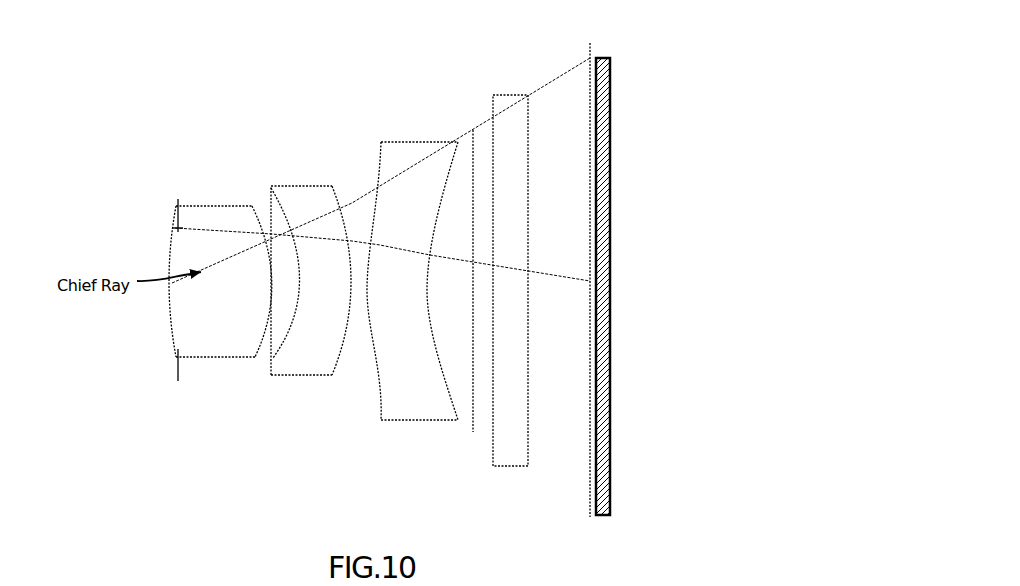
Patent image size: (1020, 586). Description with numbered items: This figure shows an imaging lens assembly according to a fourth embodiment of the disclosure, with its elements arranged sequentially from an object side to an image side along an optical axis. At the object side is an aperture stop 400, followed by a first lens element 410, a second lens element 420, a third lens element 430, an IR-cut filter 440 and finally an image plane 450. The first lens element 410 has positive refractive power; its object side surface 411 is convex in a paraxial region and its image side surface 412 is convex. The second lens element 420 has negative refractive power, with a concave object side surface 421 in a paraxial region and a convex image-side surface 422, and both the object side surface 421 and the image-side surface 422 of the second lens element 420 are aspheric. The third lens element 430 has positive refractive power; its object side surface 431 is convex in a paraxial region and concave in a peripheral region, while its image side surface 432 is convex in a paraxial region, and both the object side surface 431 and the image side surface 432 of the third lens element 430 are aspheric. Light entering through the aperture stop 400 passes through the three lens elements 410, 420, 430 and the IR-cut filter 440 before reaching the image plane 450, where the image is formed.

The aperture stop 400 is at (178, 189).
The first lens element 410 is at (229, 201).
The object side surface of first lens element 411 is at (165, 334).
The image side surface of first lens element 412 is at (258, 334).
The second lens element 420 is at (311, 181).
The object side surface of second lens element 421 is at (281, 340).
The image-side surface of second lens element 422 is at (335, 335).
The third lens element 430 is at (431, 137).
The object side surface of third lens element 431 is at (375, 378).
The image side surface of third lens element 432 is at (442, 395).
The IR-cut filter 440 is at (525, 90).
The image plane 450 is at (620, 63).